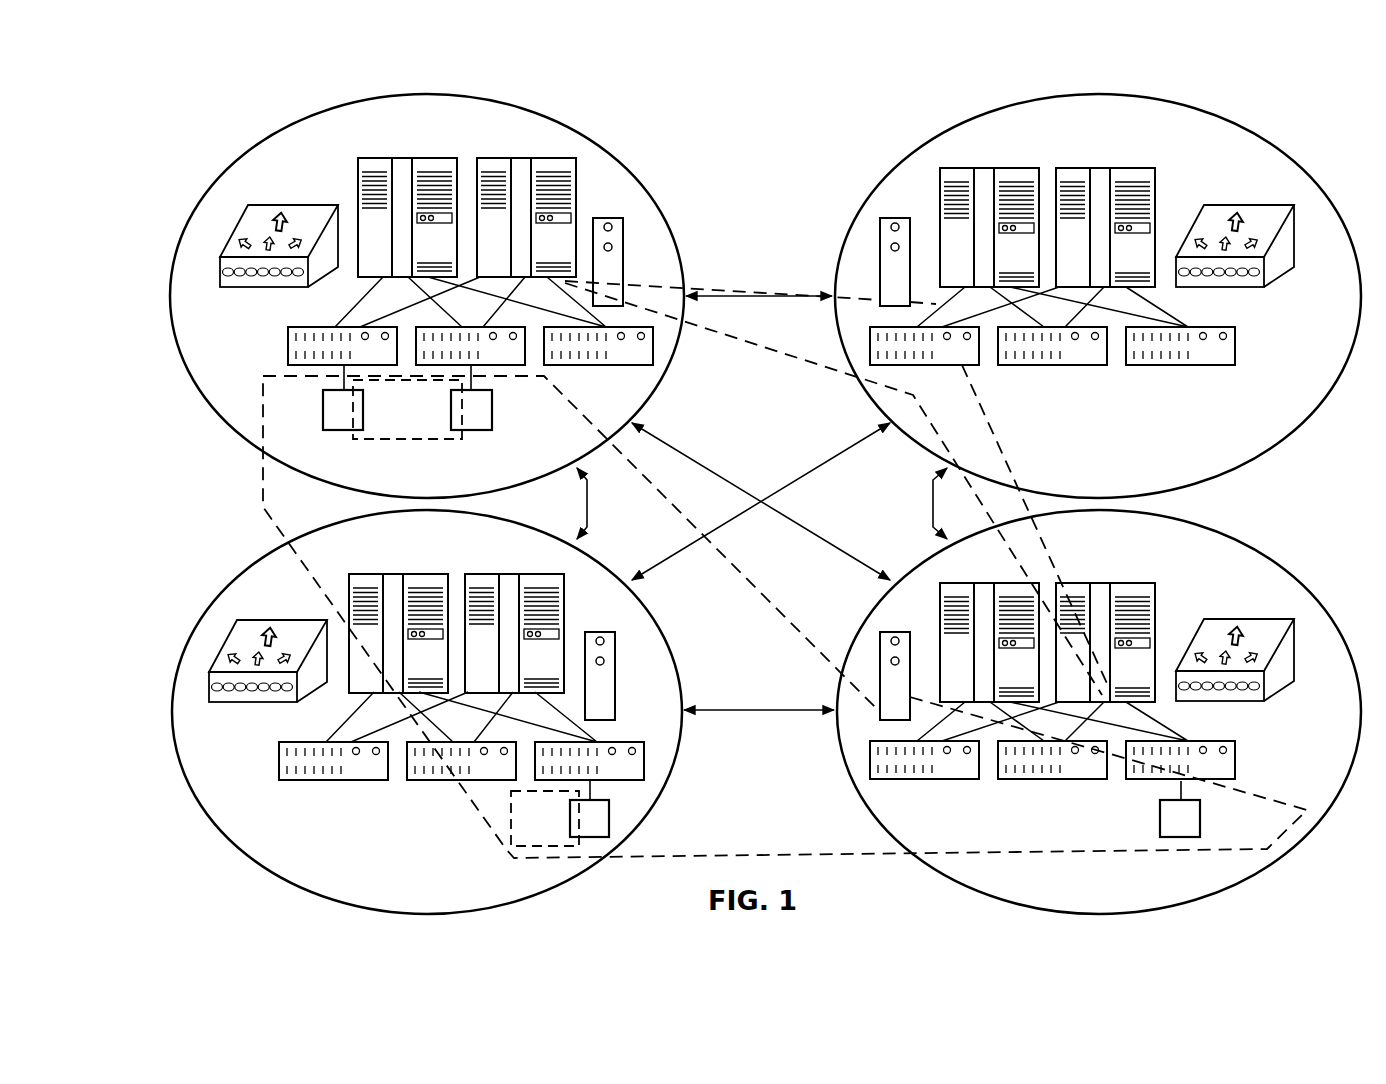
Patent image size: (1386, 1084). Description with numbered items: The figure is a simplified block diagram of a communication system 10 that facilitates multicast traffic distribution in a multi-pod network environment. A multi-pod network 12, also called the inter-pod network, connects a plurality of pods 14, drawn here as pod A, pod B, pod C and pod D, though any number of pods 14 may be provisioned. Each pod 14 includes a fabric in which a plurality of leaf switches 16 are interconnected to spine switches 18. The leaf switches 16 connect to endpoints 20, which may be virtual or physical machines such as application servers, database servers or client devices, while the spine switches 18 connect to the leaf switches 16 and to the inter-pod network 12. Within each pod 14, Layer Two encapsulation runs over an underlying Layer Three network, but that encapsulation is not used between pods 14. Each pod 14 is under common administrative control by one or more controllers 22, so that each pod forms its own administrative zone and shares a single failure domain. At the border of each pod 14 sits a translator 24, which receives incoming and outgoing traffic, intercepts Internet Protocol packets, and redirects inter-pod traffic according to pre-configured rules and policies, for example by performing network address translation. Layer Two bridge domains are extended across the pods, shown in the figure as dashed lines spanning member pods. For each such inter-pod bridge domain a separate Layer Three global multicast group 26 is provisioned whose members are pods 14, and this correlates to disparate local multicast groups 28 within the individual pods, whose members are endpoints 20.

The communication system 10 is at (765, 504).
The multi-pod network 12 is at (762, 480).
The pod 14 is at (765, 504).
The leaf switch 16 is at (758, 554).
The spine switch 18 is at (757, 427).
The endpoint 20 is at (762, 602).
The controller 22 is at (770, 466).
The translator 24 is at (752, 413).
The global multicast group 26 is at (757, 569).
The local multicast group 28 is at (466, 613).